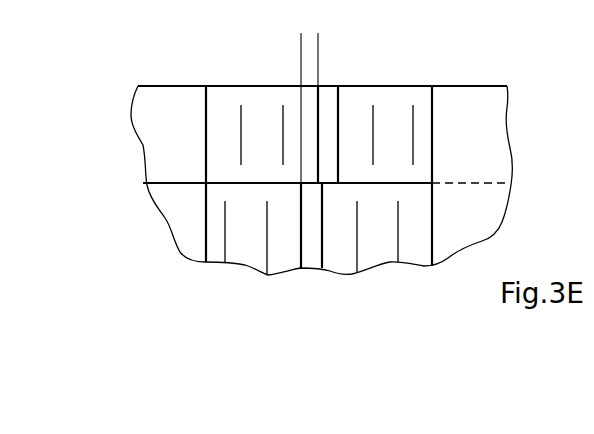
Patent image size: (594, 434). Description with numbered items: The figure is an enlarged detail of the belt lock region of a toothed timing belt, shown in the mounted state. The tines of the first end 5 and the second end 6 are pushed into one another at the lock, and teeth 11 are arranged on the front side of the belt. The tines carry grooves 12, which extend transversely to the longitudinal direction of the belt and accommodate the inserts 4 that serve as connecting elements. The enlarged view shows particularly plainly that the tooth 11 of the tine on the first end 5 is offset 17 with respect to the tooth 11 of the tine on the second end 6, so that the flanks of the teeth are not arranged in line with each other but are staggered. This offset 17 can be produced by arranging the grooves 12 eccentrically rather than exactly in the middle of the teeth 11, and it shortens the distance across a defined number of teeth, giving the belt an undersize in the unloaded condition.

The insert 4 is at (469, 105).
The first end 5 is at (524, 217).
The second end 6 is at (118, 128).
The tooth 11 is at (387, 210).
The groove 12 is at (172, 107).
The offset 17 is at (265, 38).